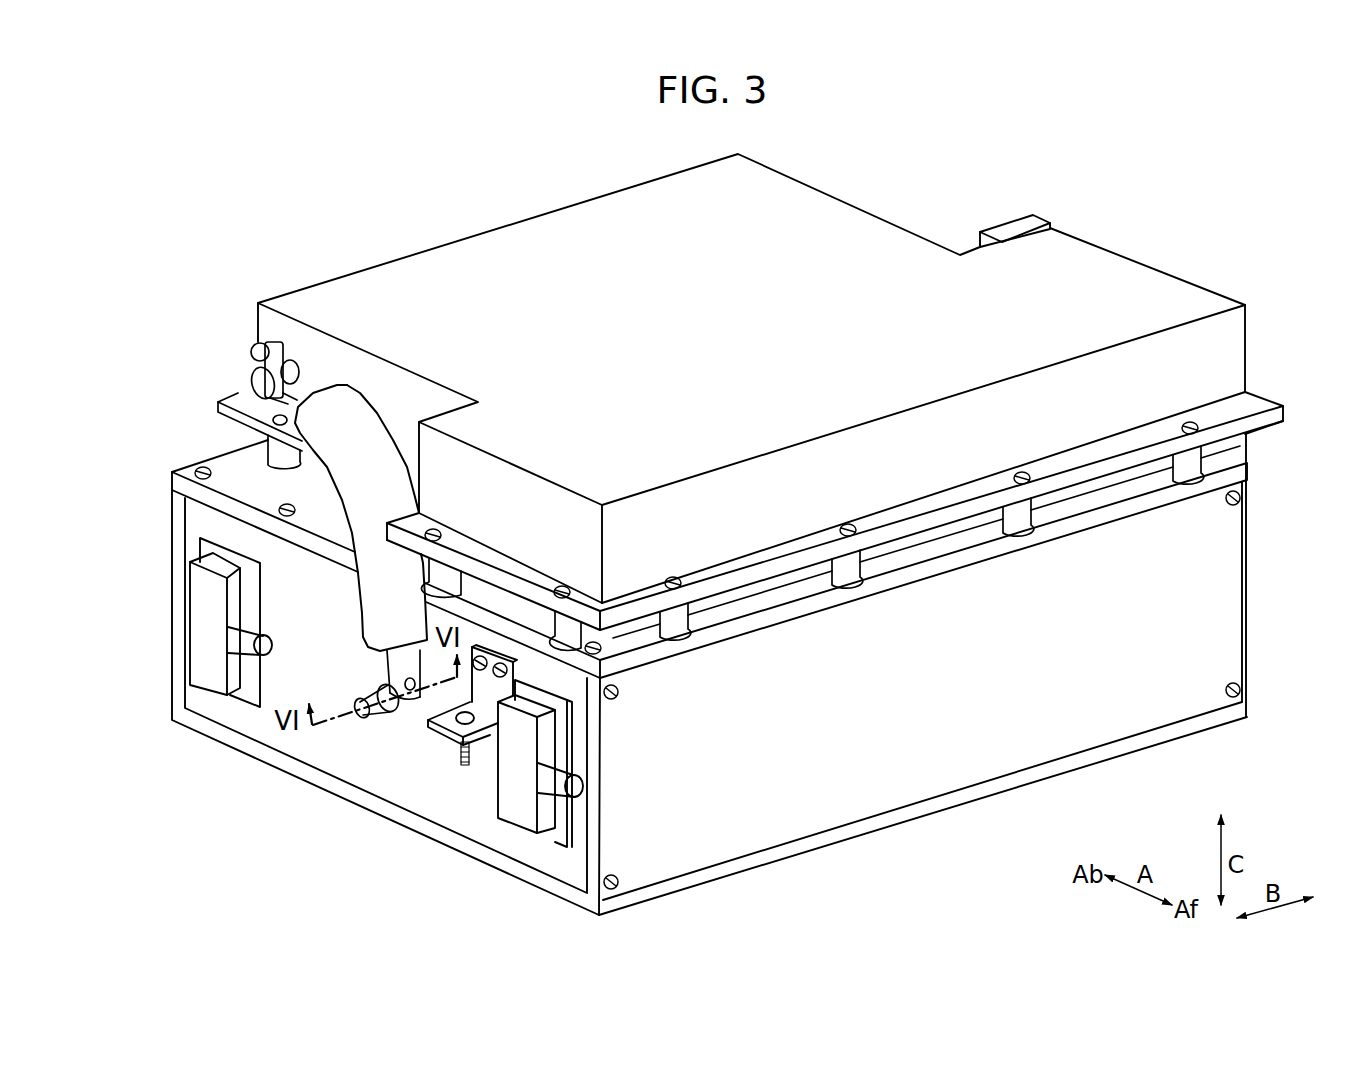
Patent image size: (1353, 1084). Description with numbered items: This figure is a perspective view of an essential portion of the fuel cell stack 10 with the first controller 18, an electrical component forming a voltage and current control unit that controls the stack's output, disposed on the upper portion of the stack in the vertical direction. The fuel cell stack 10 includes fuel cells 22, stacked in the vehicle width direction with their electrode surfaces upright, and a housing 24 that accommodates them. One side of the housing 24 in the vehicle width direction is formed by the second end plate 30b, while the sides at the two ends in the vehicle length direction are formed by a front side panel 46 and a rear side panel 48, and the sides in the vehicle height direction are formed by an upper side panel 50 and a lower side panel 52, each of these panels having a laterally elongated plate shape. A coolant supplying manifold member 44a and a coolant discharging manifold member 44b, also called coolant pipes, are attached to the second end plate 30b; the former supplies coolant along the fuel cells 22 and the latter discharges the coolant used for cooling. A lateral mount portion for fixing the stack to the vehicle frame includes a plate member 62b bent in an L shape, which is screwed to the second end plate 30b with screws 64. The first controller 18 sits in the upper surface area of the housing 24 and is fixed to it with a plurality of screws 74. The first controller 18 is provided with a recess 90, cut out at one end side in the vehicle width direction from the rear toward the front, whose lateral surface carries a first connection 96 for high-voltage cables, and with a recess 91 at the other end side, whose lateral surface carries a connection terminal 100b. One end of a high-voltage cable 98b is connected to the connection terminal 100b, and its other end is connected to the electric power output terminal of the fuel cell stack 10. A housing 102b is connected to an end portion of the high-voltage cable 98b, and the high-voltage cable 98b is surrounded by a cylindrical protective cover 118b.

The fuel cell stack 10 is at (666, 678).
The first controller 18 is at (751, 377).
The fuel cells 22 is at (1128, 713).
The housing 24 is at (857, 834).
The second end plate 30b is at (302, 747).
The coolant supplying manifold member 44a is at (196, 651).
The coolant discharging manifold member 44b is at (518, 822).
The front side panel 46 is at (782, 825).
The rear side panel 48 is at (176, 570).
The upper side panel 50 is at (225, 467).
The lower side panel 52 is at (1097, 752).
The plate member 62b is at (503, 668).
The screws 64 is at (480, 655).
The screws 74 is at (848, 524).
The recess 90 is at (902, 228).
The recess 91 is at (337, 357).
The first connection 96 is at (1008, 228).
The high-voltage cable 98b is at (392, 658).
The connection terminal 100b is at (255, 358).
The housing 102b is at (392, 724).
The cylindrical protective cover 118b is at (360, 438).